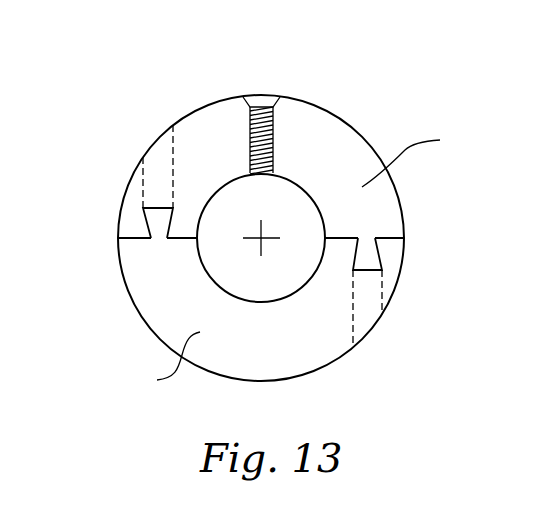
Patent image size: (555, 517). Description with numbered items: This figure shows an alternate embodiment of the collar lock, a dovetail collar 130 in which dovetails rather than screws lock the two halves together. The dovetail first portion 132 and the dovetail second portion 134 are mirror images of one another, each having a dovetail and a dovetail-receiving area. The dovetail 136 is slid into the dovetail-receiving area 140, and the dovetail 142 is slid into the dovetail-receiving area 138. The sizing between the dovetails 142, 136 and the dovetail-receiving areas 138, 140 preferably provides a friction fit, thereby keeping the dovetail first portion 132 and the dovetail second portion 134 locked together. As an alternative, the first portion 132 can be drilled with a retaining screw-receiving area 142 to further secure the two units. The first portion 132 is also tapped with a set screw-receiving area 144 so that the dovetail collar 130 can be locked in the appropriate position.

The dovetail collar 130 is at (378, 121).
The dovetail first portion 132 is at (426, 157).
The dovetail second portion 134 is at (154, 363).
The dovetail 136 is at (363, 257).
The dovetail-receiving area 138 is at (134, 230).
The dovetail-receiving area 140 is at (261, 106).
The dovetail 142 is at (155, 217).
The set screw-receiving area 144 is at (162, 158).